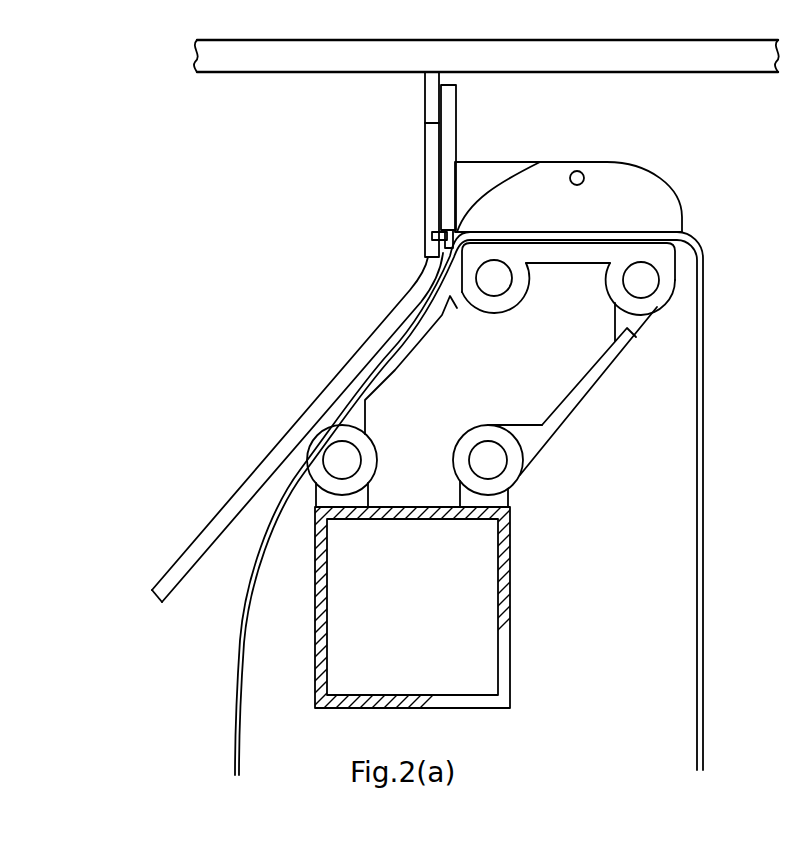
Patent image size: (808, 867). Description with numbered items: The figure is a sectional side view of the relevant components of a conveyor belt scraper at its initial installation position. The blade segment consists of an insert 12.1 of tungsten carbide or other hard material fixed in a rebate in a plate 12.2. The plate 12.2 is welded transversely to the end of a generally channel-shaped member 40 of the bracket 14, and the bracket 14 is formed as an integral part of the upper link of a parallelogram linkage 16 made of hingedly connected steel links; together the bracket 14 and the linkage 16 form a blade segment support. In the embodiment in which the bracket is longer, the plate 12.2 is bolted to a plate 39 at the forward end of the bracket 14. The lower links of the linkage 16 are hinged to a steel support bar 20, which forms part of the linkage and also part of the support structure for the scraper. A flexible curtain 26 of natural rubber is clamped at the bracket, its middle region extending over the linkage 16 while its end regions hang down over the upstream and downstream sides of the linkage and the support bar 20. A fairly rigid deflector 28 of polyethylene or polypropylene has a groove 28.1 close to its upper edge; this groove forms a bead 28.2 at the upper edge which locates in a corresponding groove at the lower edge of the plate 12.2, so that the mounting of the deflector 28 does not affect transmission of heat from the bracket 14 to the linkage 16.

The insert 12.1 is at (438, 104).
The plate 12.2 is at (434, 200).
The plate 39 is at (448, 184).
The bead 28.2 is at (432, 240).
The groove 28.1 is at (540, 162).
The bracket 14 is at (588, 157).
The channel-shaped member 40 is at (650, 193).
The flexible curtain 26 is at (708, 486).
The deflector 28 is at (212, 528).
The parallelogram linkage 16 is at (560, 440).
The support bar 20 is at (511, 642).